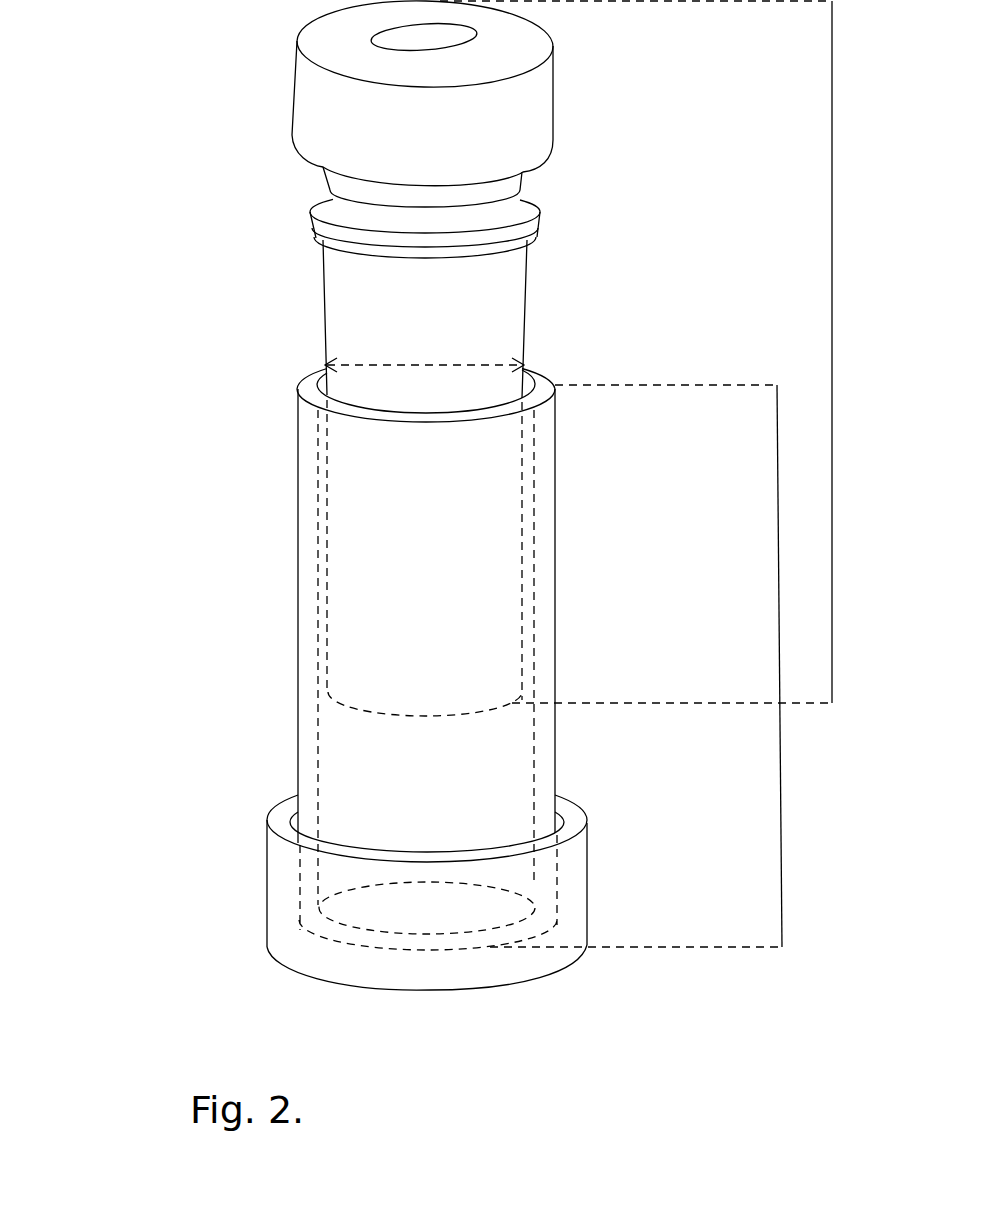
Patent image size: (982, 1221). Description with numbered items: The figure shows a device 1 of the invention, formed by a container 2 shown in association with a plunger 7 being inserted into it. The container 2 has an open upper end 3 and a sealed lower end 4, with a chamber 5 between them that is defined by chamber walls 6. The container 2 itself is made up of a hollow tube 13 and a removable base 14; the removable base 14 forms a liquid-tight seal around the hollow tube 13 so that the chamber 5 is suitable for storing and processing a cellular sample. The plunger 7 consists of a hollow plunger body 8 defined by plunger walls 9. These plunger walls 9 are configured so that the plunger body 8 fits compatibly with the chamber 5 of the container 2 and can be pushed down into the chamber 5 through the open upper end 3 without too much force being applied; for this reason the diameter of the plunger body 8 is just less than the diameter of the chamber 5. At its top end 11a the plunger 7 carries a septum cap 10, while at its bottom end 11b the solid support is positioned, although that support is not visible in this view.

The device 1 is at (163, 458).
The container 2 is at (778, 685).
The open upper end 3 is at (527, 383).
The sealed lower end 4 is at (552, 975).
The chamber 5 is at (472, 800).
The chamber walls 6 is at (579, 824).
The plunger 7 is at (832, 238).
The plunger body 8 is at (370, 313).
The plunger walls 9 is at (323, 283).
The septum cap 10 is at (552, 95).
The top end 11a is at (327, 167).
The bottom end 11b is at (368, 706).
The hollow tube 13 is at (307, 650).
The removable base 14 is at (285, 893).